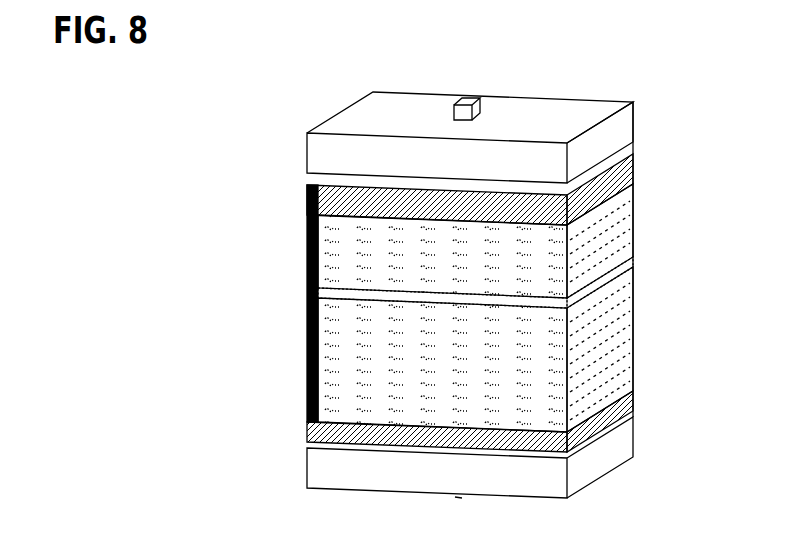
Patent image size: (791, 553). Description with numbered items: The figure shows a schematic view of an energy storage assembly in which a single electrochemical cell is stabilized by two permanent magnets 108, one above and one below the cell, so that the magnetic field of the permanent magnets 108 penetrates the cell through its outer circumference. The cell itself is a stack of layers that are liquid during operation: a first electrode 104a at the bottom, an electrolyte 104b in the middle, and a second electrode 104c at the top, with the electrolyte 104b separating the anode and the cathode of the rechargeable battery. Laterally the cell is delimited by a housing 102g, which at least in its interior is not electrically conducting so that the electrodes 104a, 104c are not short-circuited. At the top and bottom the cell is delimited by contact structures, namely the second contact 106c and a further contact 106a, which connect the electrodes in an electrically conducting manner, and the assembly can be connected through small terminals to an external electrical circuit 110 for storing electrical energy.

The permanent magnets 108 is at (617, 132).
The external electrical circuit 110 is at (480, 102).
The second contact 106c is at (309, 211).
The second electrode 104c is at (309, 257).
The electrolyte 104b is at (309, 292).
The first electrode 104a is at (320, 380).
The housing 102g is at (309, 350).
The lower insulating layer 106a is at (330, 429).